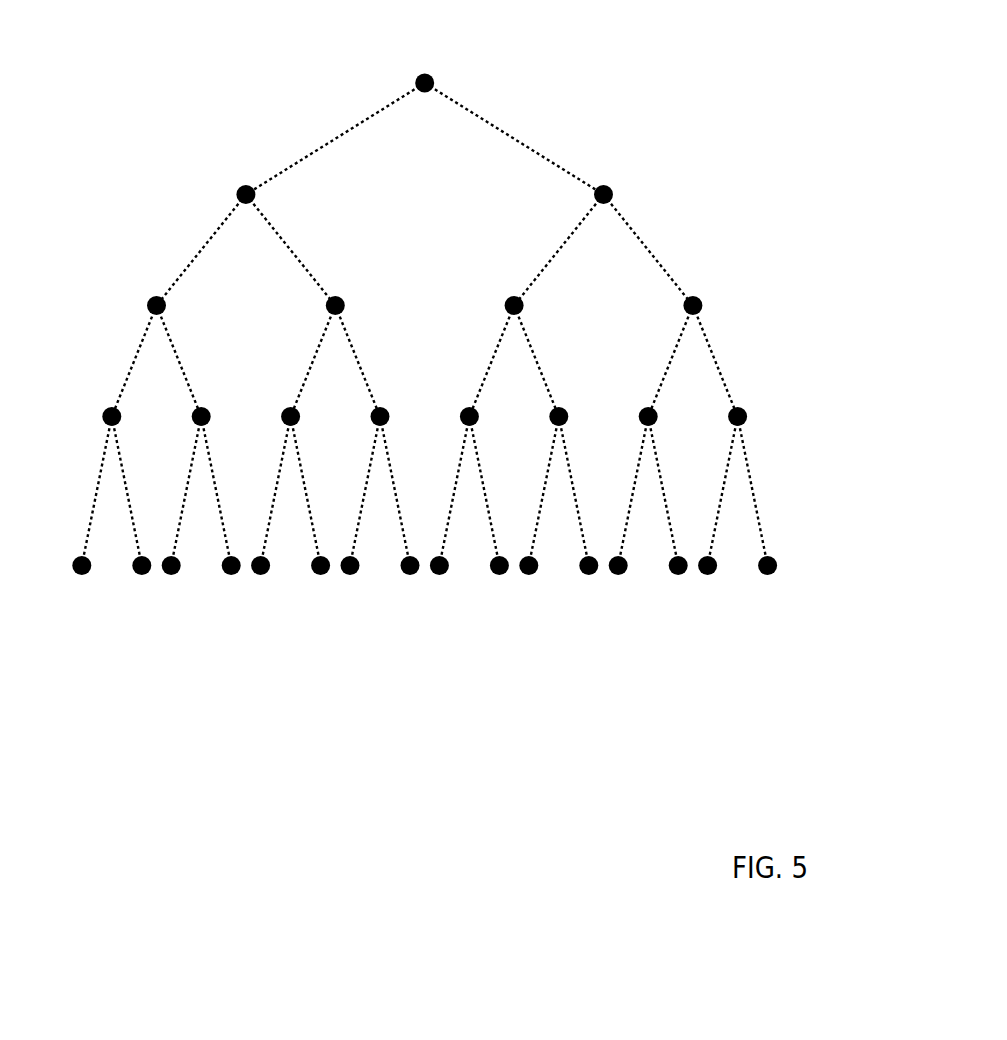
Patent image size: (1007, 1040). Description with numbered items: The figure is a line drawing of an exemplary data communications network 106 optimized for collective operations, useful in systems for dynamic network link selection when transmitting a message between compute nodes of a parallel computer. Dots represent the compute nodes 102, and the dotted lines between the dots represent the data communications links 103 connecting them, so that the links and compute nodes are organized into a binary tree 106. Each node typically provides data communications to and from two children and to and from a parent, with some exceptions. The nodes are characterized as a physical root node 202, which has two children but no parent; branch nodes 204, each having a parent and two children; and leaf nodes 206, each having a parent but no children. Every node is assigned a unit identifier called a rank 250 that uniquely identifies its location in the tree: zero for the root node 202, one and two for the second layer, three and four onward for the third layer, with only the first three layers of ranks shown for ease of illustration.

The physical root node 202 is at (450, 71).
The data communications links 103 is at (345, 132).
The rank 250 is at (555, 207).
The branch nodes 204 is at (789, 145).
The leaf nodes 206 is at (498, 573).
The compute nodes 102 is at (484, 409).
The data communications network optimized for collective operations 106 is at (455, 414).